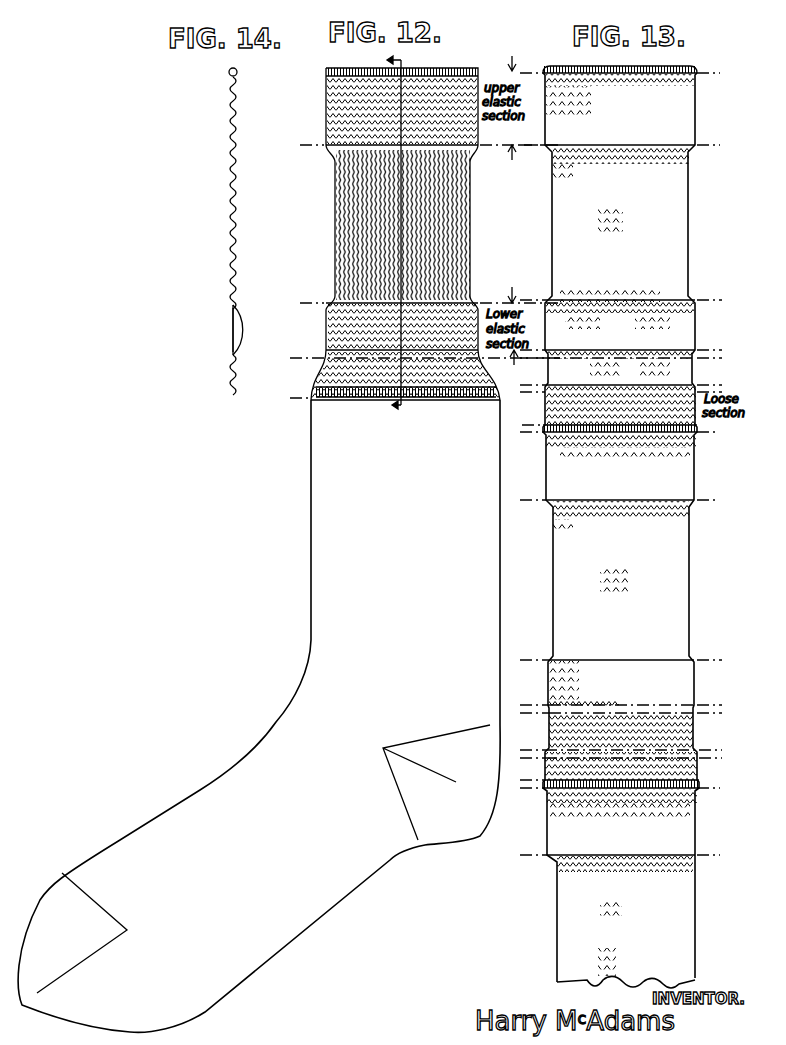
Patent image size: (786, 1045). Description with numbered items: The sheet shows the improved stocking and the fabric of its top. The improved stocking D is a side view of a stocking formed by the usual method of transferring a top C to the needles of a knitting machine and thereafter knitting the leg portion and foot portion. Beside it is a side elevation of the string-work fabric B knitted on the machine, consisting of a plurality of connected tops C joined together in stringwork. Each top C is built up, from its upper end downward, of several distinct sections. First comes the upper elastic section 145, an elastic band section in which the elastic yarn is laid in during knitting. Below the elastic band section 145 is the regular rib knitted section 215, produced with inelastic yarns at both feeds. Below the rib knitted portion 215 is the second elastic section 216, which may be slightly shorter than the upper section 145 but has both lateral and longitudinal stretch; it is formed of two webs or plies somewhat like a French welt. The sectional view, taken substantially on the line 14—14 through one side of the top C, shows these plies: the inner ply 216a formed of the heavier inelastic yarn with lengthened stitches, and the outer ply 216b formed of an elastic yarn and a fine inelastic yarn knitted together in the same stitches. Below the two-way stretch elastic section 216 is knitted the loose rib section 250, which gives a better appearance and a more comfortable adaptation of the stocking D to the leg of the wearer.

In FIG. 12, the section line 14 is at (381, 237).
In FIG. 13, the upper elastic section 145 is at (698, 122).
In FIG. 13, the rib knitted section 215 is at (690, 252).
In FIG. 13, the second elastic section 216 is at (697, 326).
In FIG. 14, the inner ply 216a is at (244, 327).
In FIG. 14, the outer ply 216b is at (231, 333).
In FIG. 12, the loose rib section 250 is at (328, 386).
In FIG. 13, the loose rib section 250 is at (700, 369).
In FIG. 13, the string-work fabric B is at (556, 611).
In FIG. 14, the top C is at (230, 175).
In FIG. 12, the top C is at (345, 224).
In FIG. 13, the top C is at (668, 213).
In FIG. 12, the improved stocking D is at (332, 566).